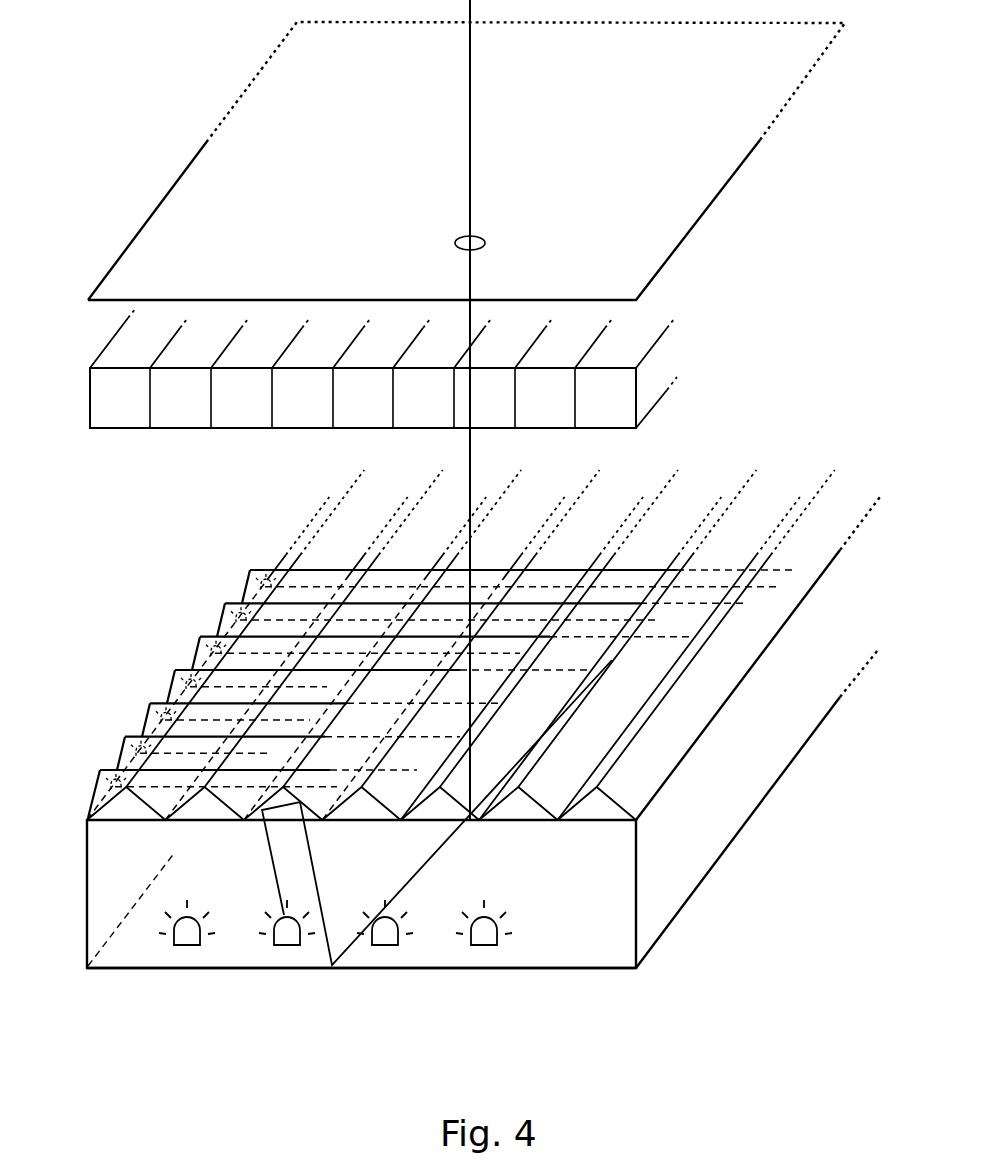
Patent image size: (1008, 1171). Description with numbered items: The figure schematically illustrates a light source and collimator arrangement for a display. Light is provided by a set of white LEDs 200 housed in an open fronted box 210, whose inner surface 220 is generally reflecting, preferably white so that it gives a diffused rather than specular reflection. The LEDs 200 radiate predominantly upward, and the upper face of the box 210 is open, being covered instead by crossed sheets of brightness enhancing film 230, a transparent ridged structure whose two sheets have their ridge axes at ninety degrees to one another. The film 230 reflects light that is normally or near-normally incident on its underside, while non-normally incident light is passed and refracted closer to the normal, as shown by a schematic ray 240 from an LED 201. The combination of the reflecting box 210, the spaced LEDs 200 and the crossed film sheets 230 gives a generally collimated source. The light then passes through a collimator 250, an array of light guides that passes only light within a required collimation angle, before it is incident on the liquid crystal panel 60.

The liquid crystal panel 60 is at (702, 167).
The collimator 250 is at (122, 418).
The brightness enhancing film 230 is at (202, 807).
The open fronted box 210 is at (688, 862).
The inner surface 220 is at (565, 952).
The white LEDs 200 is at (484, 946).
The LED 201 is at (284, 946).
The schematic ray 240 is at (343, 958).